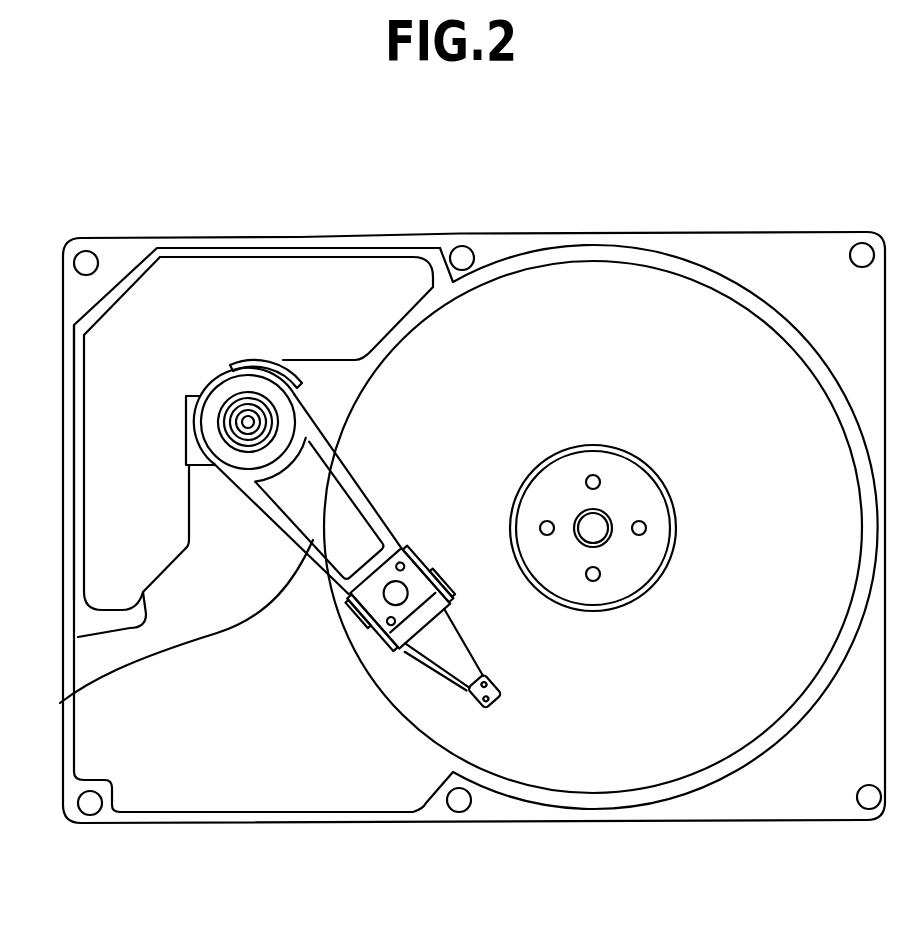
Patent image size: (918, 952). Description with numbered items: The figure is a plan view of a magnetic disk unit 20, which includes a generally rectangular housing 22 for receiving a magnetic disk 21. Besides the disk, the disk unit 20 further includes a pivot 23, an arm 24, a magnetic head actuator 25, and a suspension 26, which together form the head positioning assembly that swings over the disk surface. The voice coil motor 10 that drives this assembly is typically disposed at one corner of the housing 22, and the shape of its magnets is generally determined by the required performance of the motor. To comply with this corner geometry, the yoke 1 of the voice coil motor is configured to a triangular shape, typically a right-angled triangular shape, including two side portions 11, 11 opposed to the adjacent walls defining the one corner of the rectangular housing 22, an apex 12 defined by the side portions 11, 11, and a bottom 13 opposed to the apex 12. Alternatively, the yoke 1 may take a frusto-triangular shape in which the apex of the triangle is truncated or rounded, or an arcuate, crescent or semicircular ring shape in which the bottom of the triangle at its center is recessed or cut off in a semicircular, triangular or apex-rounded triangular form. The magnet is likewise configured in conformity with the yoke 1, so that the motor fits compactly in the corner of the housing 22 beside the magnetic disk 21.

The yoke 1 is at (113, 372).
The voice coil motor 10 is at (231, 278).
The side portions 11 is at (347, 249).
The apex 12 is at (124, 278).
The bottom 13 is at (82, 634).
The magnetic disk unit 20 is at (643, 843).
The magnetic disk 21 is at (723, 357).
The housing 22 is at (207, 823).
The pivot 23 is at (250, 416).
The arm 24 is at (60, 703).
The magnetic head actuator 25 is at (412, 632).
The suspension 26 is at (452, 660).